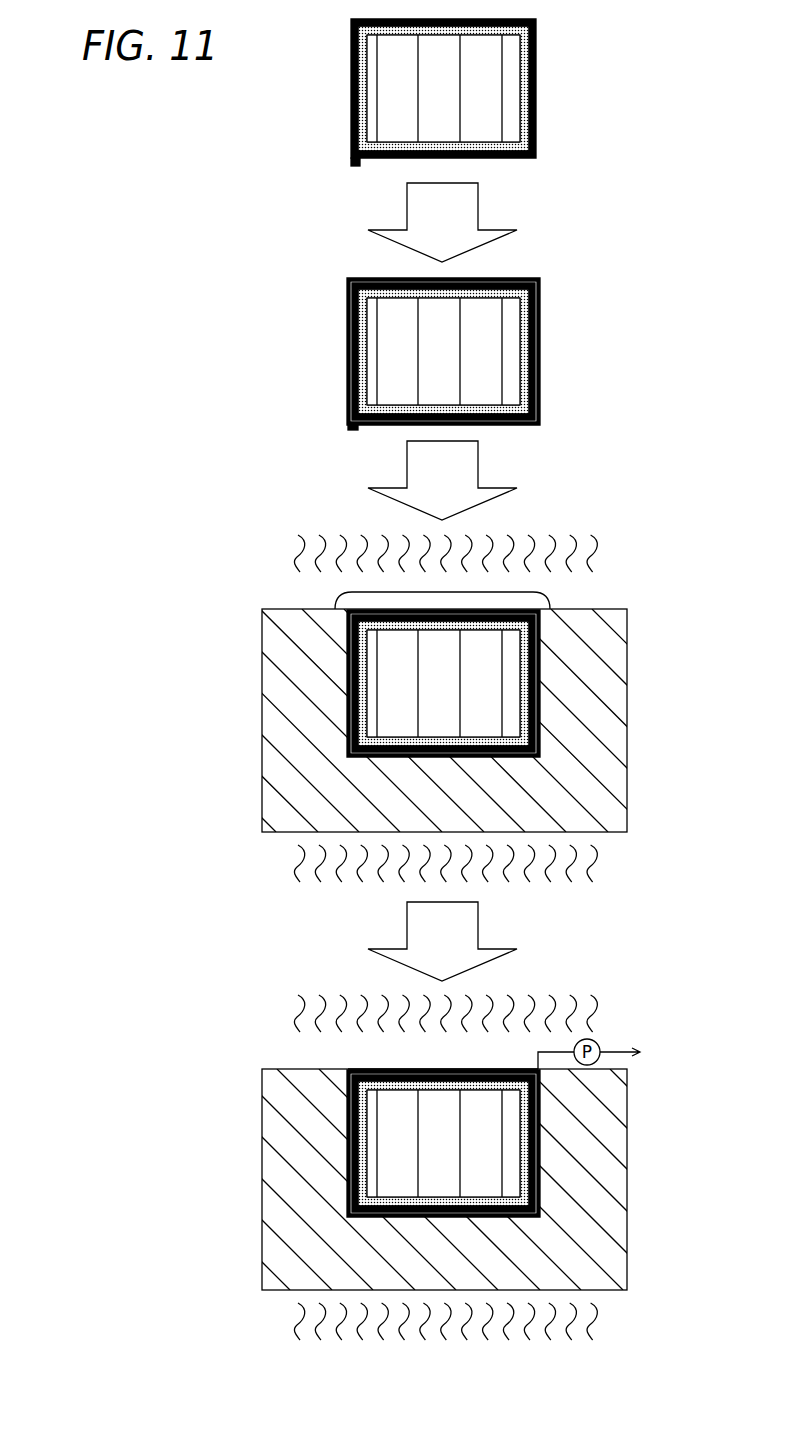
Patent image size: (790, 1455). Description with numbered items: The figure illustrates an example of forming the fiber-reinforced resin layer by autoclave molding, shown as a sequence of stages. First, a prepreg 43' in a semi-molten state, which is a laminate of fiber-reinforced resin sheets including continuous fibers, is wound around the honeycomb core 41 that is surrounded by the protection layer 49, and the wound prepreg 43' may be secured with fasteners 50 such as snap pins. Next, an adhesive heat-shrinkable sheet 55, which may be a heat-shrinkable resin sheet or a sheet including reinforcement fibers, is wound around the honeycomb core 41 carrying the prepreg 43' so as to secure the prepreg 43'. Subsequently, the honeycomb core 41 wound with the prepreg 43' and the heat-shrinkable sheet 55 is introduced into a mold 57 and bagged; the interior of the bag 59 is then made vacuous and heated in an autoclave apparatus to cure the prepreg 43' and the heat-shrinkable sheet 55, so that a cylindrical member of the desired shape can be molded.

The honeycomb core 41 is at (372, 78).
The prepreg 43' is at (524, 616).
The protection layer 49 is at (537, 124).
The fastener 50 is at (352, 160).
The heat-shrinkable sheet 55 is at (538, 312).
The mold 57 is at (625, 670).
The bag 59 is at (552, 600).